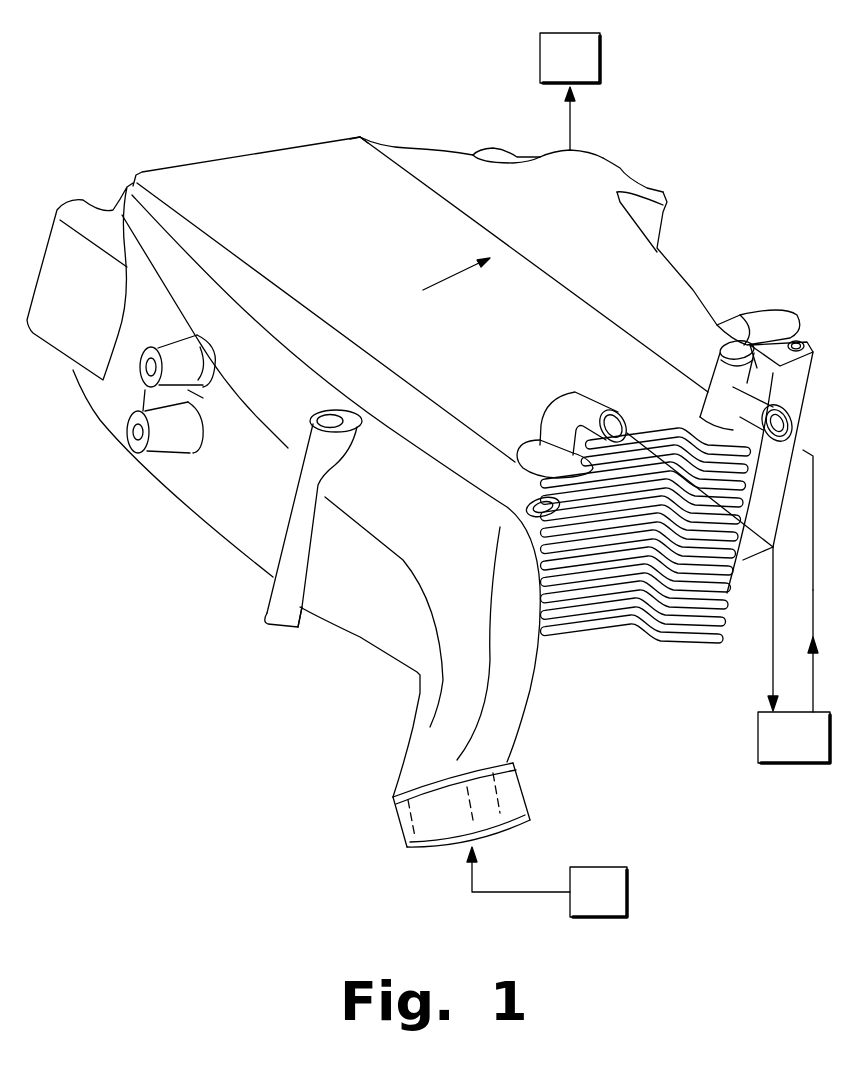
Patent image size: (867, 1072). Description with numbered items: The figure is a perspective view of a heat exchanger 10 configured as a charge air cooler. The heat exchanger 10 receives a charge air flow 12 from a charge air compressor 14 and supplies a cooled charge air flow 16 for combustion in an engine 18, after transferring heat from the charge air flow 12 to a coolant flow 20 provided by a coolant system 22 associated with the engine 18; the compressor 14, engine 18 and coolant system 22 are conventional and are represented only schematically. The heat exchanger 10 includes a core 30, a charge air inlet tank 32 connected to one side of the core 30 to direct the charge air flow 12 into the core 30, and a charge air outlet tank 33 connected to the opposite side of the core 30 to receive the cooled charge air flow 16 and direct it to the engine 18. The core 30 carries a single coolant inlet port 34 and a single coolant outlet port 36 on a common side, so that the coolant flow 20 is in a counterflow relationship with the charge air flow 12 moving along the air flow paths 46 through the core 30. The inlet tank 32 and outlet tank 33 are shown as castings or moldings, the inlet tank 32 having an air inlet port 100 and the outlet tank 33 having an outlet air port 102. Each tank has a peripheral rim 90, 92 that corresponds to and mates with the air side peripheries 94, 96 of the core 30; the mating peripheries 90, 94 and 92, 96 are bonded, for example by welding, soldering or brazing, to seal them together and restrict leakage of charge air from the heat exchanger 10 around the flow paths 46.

The heat exchanger 10 is at (209, 91).
The charge air flow 12 is at (472, 892).
The charge air compressor 14 is at (586, 904).
The cooled charge air flow 16 is at (573, 123).
The engine 18 is at (558, 72).
The coolant flow 20 is at (773, 655).
The coolant system 22 is at (782, 750).
The core 30 is at (309, 134).
The charge air inlet tank 32 is at (206, 546).
The charge air outlet tank 33 is at (682, 236).
The coolant inlet port 34 is at (767, 392).
The coolant outlet port 36 is at (597, 388).
The air flow paths 46 is at (423, 290).
The peripheral rim 90 is at (124, 184).
The peripheral rim 92 is at (398, 153).
The air side periphery 94 is at (153, 182).
The air side periphery 96 is at (365, 140).
The air inlet port 100 is at (382, 796).
The outlet air port 102 is at (627, 155).